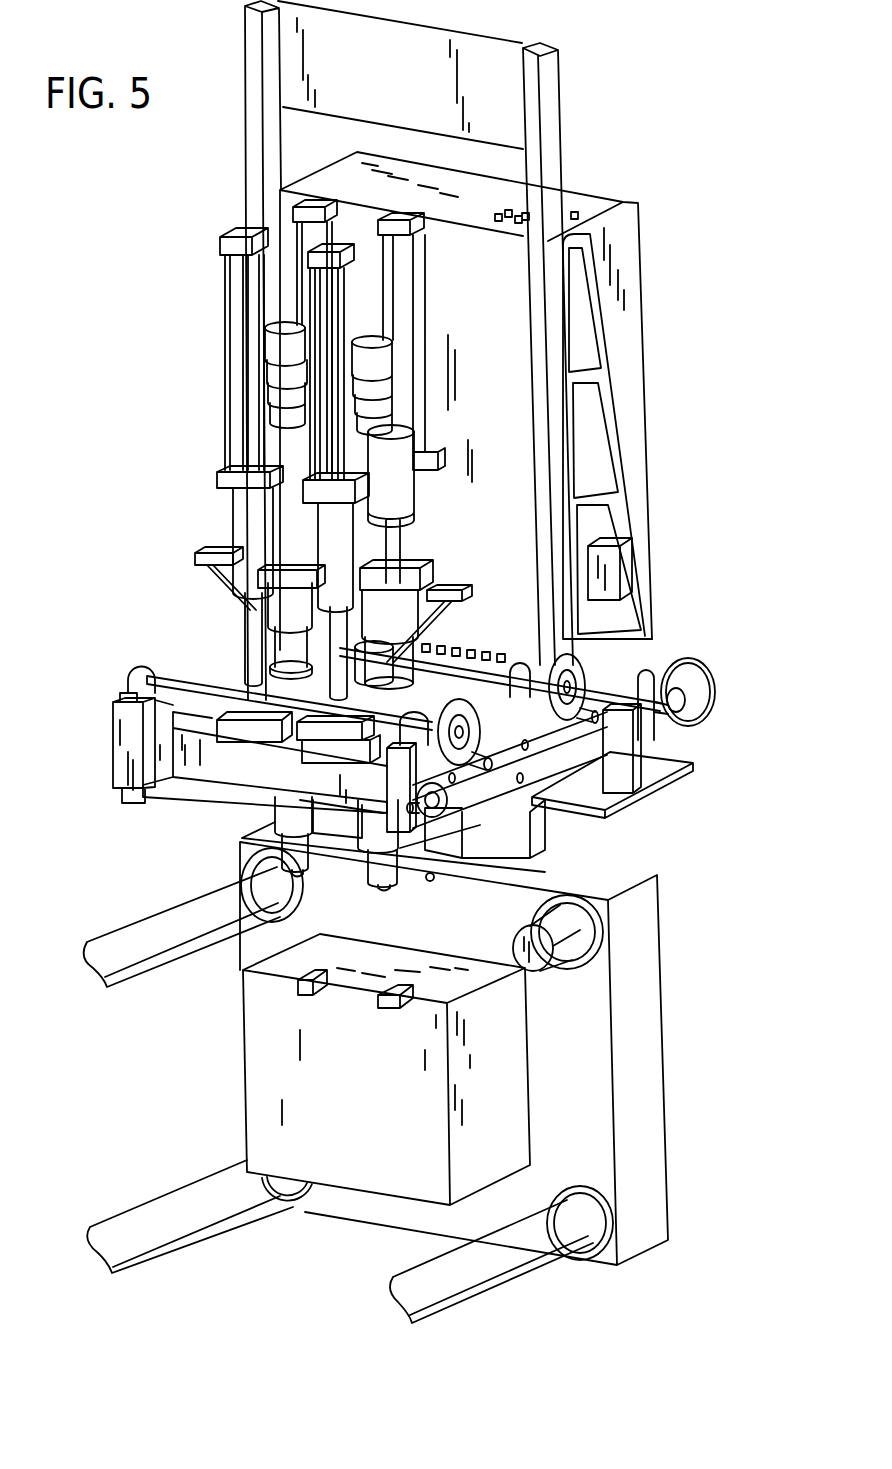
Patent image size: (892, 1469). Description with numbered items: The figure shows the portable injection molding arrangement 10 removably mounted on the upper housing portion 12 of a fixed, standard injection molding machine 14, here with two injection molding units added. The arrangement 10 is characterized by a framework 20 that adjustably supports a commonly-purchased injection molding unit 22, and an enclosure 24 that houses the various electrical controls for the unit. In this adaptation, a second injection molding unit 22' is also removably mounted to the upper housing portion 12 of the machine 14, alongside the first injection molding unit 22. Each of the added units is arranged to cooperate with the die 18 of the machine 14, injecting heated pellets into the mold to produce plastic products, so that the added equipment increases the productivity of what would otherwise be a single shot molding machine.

The portable injection molding arrangement 10 is at (663, 173).
The upper housing portion 12 is at (556, 846).
The injection molding machine 14 is at (648, 1025).
The die 18 is at (243, 1068).
The framework 20 is at (703, 743).
The injection molding unit 22 is at (404, 456).
The second injection molding unit 22' is at (246, 443).
The enclosure 24 is at (660, 353).